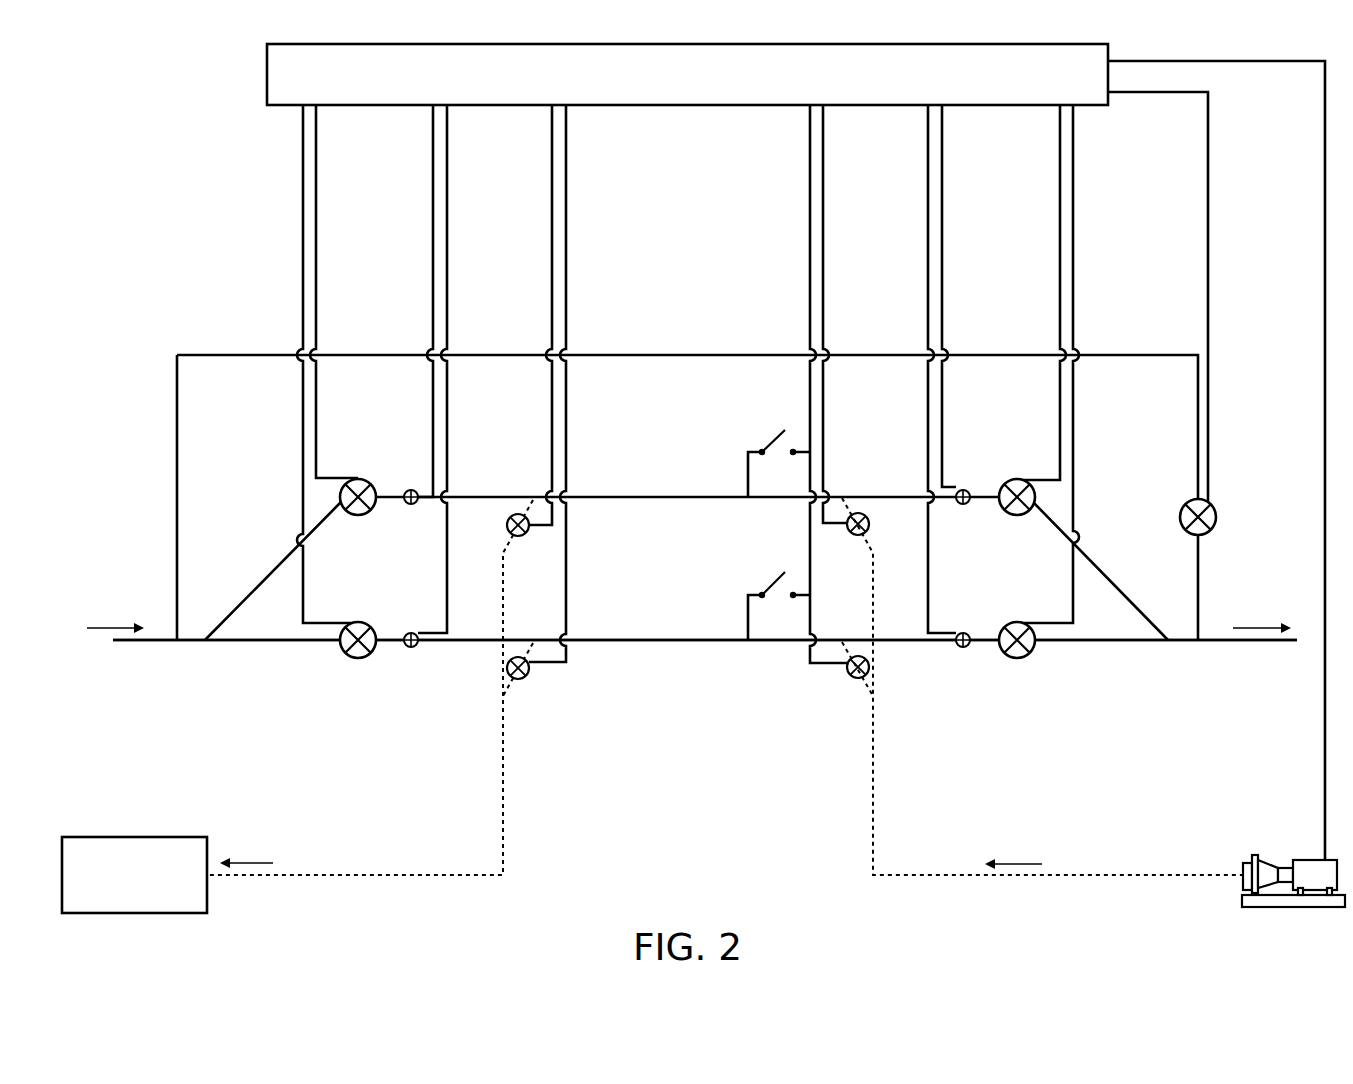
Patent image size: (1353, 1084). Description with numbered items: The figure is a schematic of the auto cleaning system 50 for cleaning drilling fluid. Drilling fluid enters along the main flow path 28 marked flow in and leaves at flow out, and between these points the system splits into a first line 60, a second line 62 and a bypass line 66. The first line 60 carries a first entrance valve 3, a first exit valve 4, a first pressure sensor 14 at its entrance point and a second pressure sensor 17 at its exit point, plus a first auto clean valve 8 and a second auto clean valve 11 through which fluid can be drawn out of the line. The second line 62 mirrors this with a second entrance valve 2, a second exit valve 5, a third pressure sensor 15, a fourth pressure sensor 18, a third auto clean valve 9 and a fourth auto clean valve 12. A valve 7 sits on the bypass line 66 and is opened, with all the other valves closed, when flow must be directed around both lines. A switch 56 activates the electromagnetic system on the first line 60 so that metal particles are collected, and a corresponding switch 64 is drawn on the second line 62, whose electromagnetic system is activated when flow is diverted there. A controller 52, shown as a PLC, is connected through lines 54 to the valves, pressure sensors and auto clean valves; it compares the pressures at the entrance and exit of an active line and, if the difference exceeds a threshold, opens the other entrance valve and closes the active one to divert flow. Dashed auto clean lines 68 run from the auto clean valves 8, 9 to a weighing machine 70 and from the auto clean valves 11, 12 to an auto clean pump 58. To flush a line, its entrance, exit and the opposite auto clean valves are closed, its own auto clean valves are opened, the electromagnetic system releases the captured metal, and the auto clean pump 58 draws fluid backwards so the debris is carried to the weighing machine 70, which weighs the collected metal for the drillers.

The auto cleaning system 50 is at (190, 100).
The flow conduit 28 is at (115, 628).
The controller 52 is at (638, 105).
The lines 54 is at (316, 236).
The bypass line 66 is at (598, 355).
The first line 60 is at (598, 497).
The second line 62 is at (598, 640).
The switch 56 is at (784, 431).
The second switch 64 is at (783, 573).
The second entrance valve 2 is at (358, 625).
The first entrance valve 3 is at (358, 481).
The first exit valve 4 is at (1017, 481).
The second exit valve 5 is at (1017, 625).
The valve 7 is at (1191, 505).
The first auto clean valve 8 is at (524, 538).
The third auto clean valve 9 is at (524, 681).
The second auto clean valve 11 is at (848, 537).
The fourth auto clean valve 12 is at (848, 680).
The first pressure sensor 14 is at (411, 481).
The third pressure sensor 15 is at (411, 624).
The second pressure sensor 17 is at (963, 481).
The fourth pressure sensor 18 is at (963, 624).
The weighing machine 70 is at (162, 837).
The auto clean line 68 is at (1087, 875).
The auto clean pump 58 is at (1310, 860).